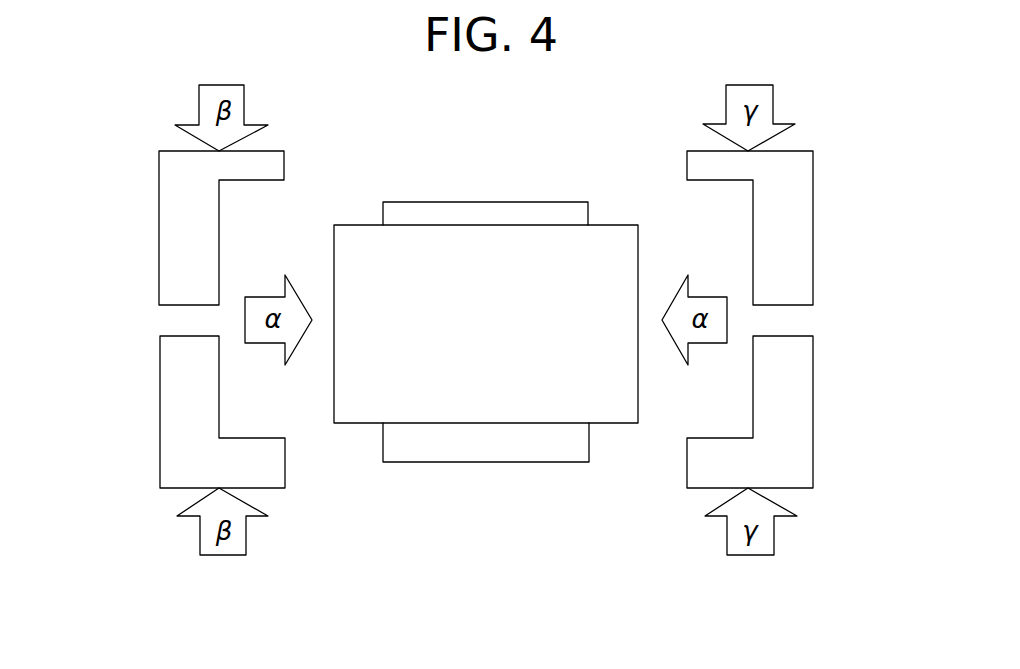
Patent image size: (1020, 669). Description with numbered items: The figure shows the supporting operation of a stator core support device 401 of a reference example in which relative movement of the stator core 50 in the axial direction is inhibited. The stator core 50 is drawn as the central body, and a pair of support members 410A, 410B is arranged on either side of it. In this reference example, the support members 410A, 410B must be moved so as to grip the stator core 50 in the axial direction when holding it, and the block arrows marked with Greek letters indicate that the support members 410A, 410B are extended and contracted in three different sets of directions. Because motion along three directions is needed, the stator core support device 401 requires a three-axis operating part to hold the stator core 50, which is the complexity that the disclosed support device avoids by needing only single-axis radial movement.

The stator core support device 401 is at (540, 165).
The stator core 50 is at (493, 403).
The support member 410A is at (148, 317).
The support member 410B is at (820, 323).